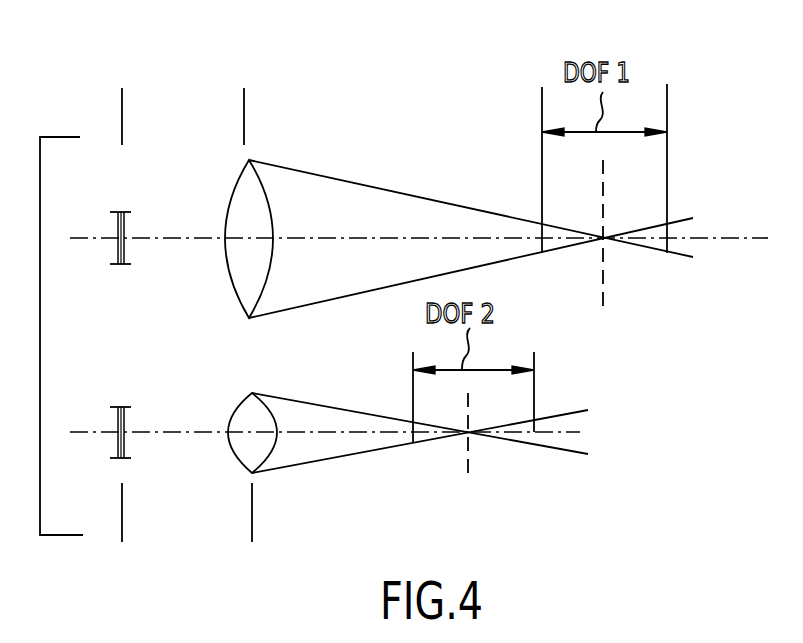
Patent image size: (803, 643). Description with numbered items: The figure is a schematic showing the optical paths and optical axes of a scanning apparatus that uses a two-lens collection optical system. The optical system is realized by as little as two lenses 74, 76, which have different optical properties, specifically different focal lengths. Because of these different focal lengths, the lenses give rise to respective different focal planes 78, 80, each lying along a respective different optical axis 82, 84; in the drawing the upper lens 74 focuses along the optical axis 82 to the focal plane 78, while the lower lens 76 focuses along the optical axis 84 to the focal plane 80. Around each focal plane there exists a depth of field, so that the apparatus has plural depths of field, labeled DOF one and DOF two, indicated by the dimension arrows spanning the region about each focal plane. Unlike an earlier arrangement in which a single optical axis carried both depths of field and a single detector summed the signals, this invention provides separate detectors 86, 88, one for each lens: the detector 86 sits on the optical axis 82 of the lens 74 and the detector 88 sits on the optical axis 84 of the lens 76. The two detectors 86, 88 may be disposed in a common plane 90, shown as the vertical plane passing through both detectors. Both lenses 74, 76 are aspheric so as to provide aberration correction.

The lens 74 is at (258, 193).
The lens 76 is at (255, 418).
The focal plane 78 is at (603, 188).
The focal plane 80 is at (470, 408).
The optical axis 82 is at (177, 238).
The optical axis 84 is at (188, 432).
The detector 86 is at (124, 225).
The detector 88 is at (124, 420).
The common plane 90 is at (122, 113).